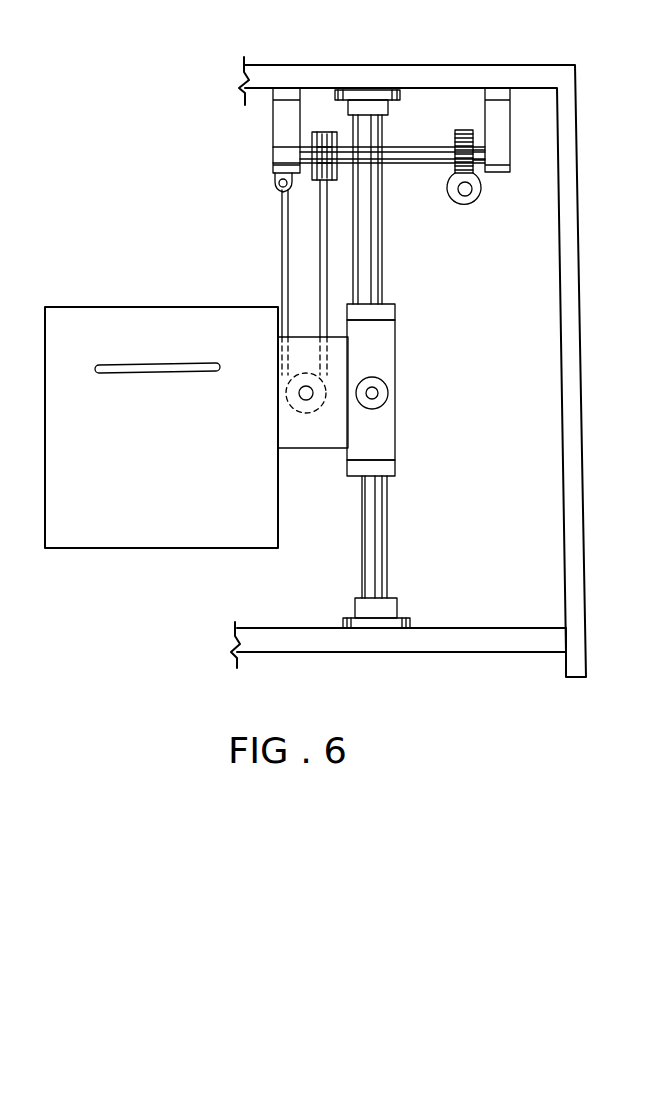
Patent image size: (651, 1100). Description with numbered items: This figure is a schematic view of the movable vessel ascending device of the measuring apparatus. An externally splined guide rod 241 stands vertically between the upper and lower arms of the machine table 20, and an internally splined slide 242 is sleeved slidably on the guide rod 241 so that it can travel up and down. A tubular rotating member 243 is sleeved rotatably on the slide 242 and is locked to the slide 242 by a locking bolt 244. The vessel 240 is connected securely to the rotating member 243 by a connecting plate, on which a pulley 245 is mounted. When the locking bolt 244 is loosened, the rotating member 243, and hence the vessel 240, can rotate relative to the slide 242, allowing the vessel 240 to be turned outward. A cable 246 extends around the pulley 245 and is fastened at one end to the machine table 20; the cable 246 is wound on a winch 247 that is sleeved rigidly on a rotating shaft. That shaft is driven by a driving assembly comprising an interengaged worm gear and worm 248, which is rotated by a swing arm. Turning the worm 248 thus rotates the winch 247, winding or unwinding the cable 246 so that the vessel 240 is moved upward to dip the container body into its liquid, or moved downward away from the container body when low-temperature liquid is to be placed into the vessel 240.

The machine table 20 is at (476, 70).
The vessel 240 is at (185, 528).
The externally splined guide rod 241 is at (380, 542).
The internally splined slide 242 is at (395, 311).
The tubular rotating member 243 is at (388, 356).
The locking bolt 244 is at (388, 393).
The pulley 245 is at (306, 413).
The cable 246 is at (280, 238).
The winch 247 is at (318, 131).
The worm gear and worm 248 is at (466, 206).